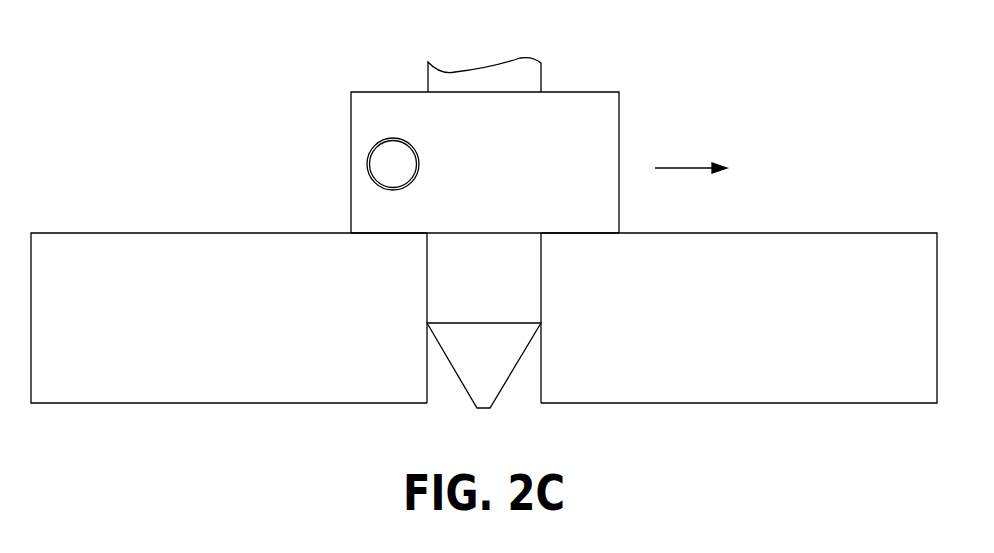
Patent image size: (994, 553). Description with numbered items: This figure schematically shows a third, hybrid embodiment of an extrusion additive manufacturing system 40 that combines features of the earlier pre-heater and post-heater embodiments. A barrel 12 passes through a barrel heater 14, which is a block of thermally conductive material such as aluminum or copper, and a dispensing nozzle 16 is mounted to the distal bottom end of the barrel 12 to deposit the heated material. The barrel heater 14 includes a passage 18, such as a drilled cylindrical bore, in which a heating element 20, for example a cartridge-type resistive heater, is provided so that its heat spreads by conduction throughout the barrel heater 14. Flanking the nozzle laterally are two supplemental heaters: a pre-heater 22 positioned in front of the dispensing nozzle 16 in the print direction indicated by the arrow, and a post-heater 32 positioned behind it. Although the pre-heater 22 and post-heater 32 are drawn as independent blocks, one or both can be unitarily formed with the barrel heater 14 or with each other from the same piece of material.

The barrel 12 is at (540, 72).
The barrel heater 14 is at (471, 176).
The dispensing nozzle 16 is at (471, 365).
The passage 18 is at (367, 157).
The heating element 20 is at (381, 176).
The pre-heater 22 is at (726, 332).
The post-heater 32 is at (229, 318).
The extrusion AM system 40 is at (784, 66).